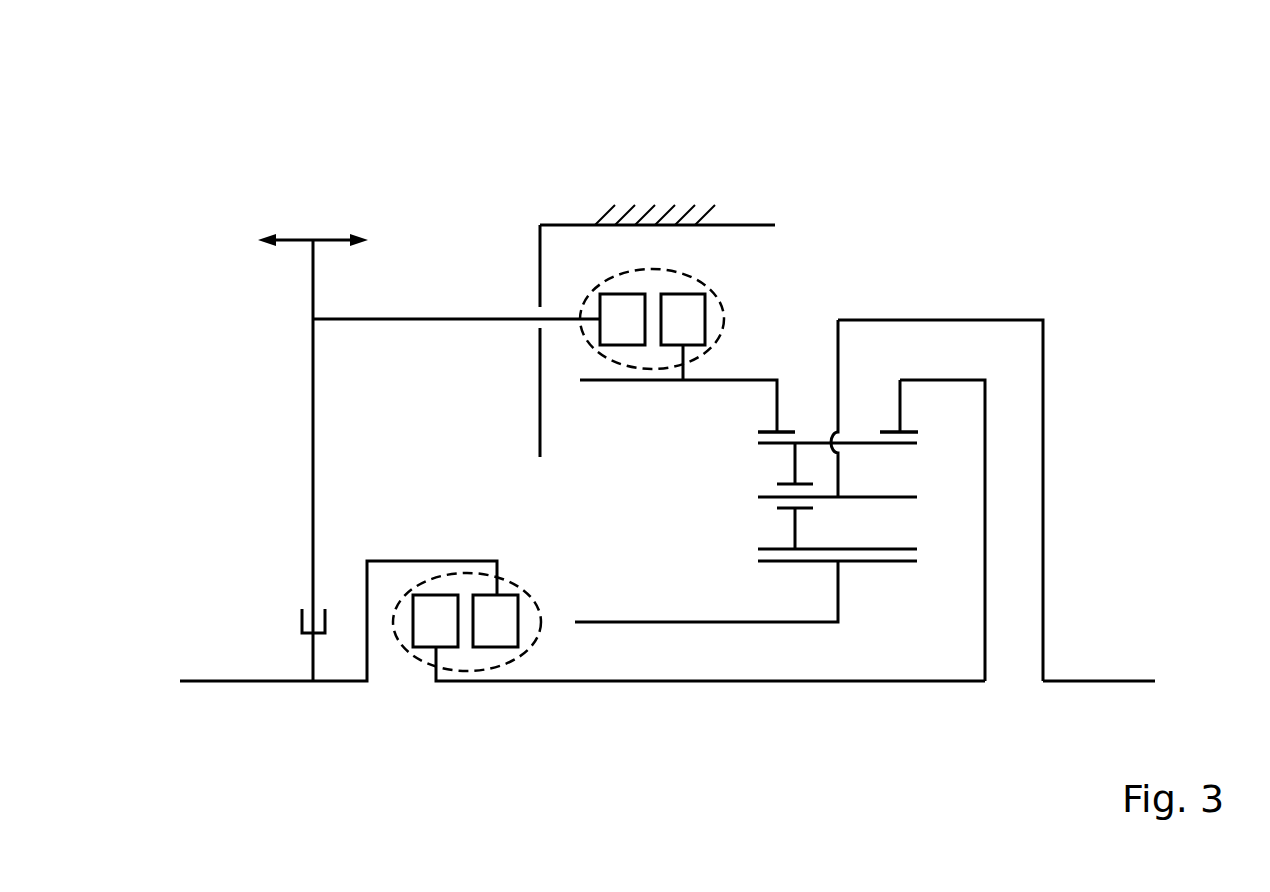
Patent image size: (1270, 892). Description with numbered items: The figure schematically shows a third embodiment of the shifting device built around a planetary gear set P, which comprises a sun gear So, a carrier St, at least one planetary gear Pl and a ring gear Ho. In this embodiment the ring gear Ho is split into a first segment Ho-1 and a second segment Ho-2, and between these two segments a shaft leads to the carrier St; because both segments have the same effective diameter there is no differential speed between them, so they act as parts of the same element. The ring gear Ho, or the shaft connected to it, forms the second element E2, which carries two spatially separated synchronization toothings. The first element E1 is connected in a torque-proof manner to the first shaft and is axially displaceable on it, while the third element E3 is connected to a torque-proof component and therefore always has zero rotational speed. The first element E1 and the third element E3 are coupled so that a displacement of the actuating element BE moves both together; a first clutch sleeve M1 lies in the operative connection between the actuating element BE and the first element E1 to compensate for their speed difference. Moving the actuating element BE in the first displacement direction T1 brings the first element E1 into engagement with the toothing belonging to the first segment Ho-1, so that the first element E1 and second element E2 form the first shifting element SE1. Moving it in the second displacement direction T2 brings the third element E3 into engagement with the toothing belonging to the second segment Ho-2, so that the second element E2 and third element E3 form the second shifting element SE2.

The actuating element BE is at (313, 398).
The first displacement direction T1 is at (285, 221).
The second displacement direction T2 is at (340, 221).
The second shifting element SE2 is at (595, 288).
The third element E3 is at (622, 307).
The second element E2 is at (690, 313).
The first element E1 is at (492, 633).
The first shifting element SE1 is at (515, 664).
The first clutch sleeve M1 is at (302, 642).
The ring gear Ho is at (972, 93).
The second segment Ho-2 is at (787, 432).
The first segment Ho-1 is at (888, 432).
The planetary gear Pl is at (897, 443).
The carrier St is at (897, 497).
The sun gear So is at (855, 561).
The planetary gear set P is at (795, 697).